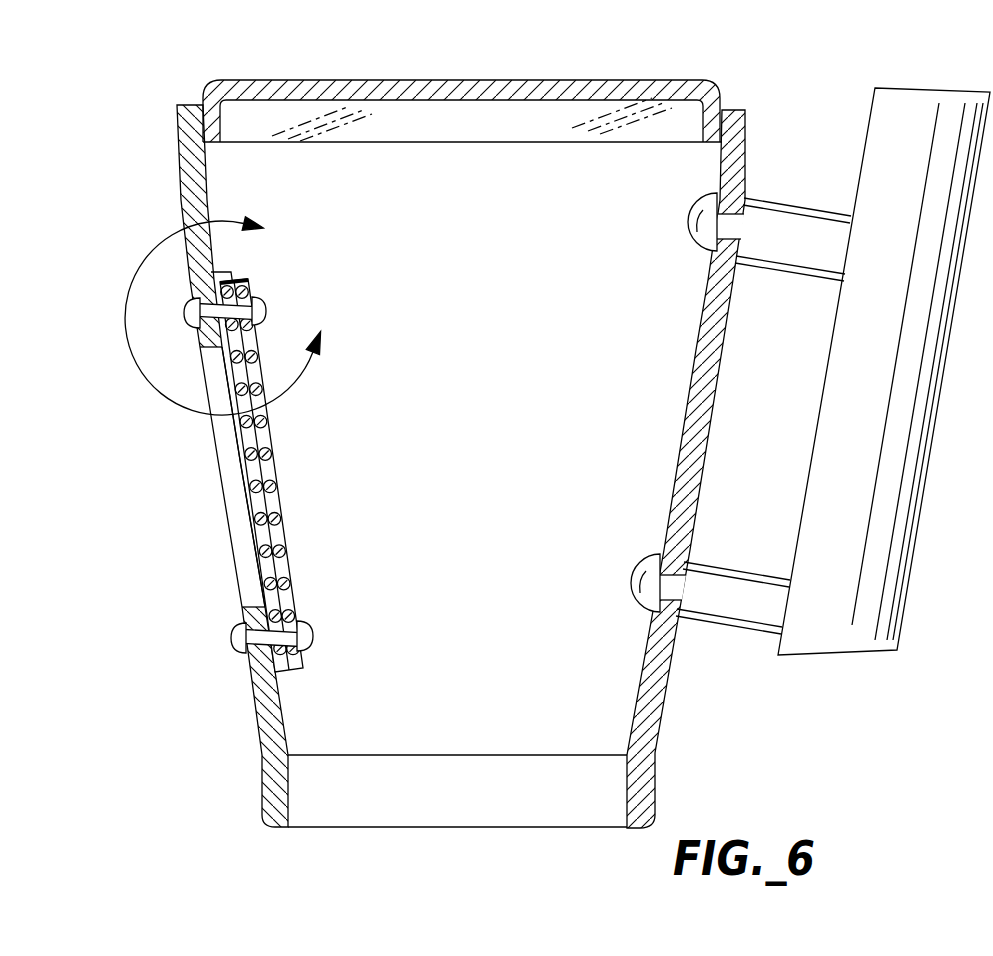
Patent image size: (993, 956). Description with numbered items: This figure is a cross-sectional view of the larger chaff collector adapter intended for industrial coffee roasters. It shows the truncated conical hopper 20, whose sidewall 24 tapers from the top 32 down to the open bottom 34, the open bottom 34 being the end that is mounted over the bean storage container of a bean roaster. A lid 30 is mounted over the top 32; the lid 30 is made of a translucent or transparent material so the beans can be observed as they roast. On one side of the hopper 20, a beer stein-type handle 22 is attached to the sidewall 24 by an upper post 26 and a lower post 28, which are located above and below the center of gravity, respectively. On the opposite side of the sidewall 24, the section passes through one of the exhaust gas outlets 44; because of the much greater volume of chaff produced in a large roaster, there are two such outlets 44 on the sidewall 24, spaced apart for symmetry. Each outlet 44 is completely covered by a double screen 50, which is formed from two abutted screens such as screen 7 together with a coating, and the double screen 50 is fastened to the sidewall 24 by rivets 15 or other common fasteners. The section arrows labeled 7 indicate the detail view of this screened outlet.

The screen 7 is at (225, 316).
The rivets 15 is at (298, 617).
The truncated conical hopper 20 is at (736, 410).
The beer stein-type handle 22 is at (850, 568).
The sidewall 24 is at (693, 505).
The upper post 26 is at (756, 240).
The lower post 28 is at (717, 602).
The lid 30 is at (358, 82).
The top 32 is at (205, 147).
The open bottom 34 is at (300, 808).
The exhaust gas outlets 44 is at (243, 578).
The double screens 50 is at (250, 504).